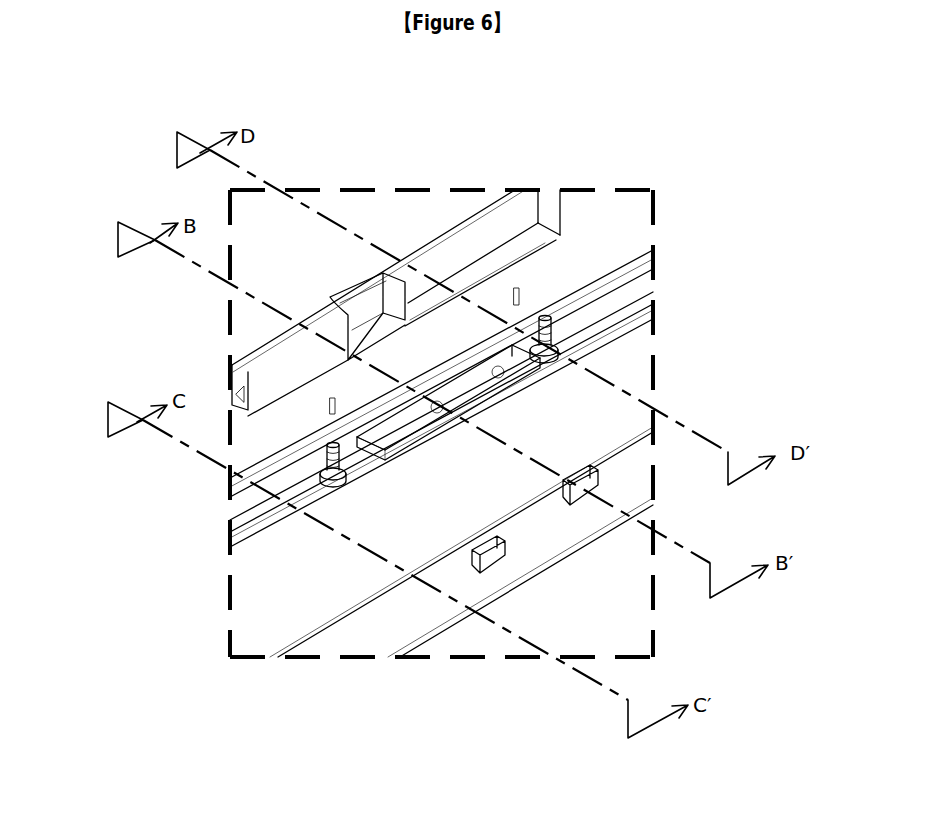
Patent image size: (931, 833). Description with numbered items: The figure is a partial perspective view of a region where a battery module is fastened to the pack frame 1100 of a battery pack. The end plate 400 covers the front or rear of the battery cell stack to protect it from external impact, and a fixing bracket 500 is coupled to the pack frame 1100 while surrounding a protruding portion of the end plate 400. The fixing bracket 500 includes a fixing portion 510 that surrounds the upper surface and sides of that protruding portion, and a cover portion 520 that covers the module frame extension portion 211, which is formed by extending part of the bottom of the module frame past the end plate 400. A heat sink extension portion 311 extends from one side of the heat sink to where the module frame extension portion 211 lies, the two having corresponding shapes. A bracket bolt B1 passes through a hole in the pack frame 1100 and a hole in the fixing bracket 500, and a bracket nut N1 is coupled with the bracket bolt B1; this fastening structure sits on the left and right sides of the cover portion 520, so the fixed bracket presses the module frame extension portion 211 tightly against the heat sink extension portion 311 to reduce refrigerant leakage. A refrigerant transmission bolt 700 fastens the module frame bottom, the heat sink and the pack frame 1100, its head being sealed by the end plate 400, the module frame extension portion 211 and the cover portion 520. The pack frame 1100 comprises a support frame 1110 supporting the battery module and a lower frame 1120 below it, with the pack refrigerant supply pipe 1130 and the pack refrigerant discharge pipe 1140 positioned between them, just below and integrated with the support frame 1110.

The end plate 400 is at (577, 208).
The fixing bracket 500 is at (441, 398).
The fixing portion 510 is at (230, 486).
The cover portion 520 is at (503, 350).
The bracket bolt B1 is at (545, 318).
The bracket nut N1 is at (540, 342).
The refrigerant transmission bolt 700 is at (350, 470).
The module frame extension portion 211 is at (387, 447).
The heat sink extension portion 311 is at (397, 478).
The pack frame 1100 is at (461, 606).
The support frame 1110 is at (293, 615).
The lower frame 1120 is at (407, 615).
The pack refrigerant supply pipe 1130 is at (593, 485).
The pack refrigerant discharge pipe 1140 is at (500, 550).